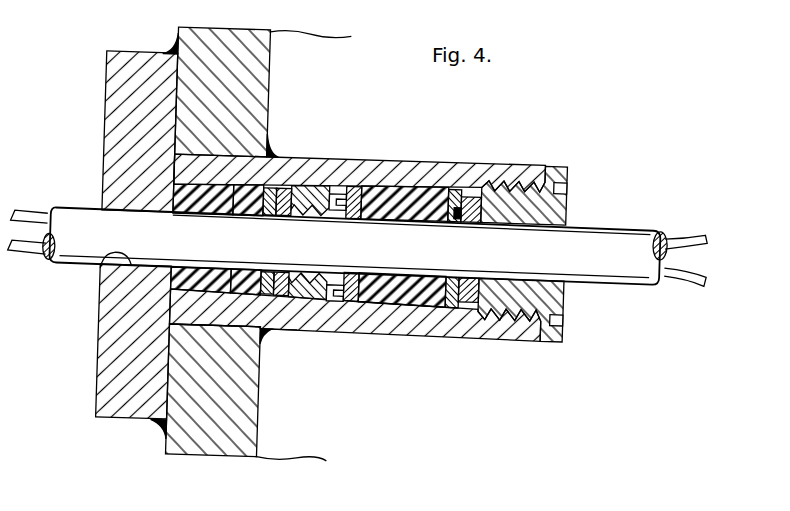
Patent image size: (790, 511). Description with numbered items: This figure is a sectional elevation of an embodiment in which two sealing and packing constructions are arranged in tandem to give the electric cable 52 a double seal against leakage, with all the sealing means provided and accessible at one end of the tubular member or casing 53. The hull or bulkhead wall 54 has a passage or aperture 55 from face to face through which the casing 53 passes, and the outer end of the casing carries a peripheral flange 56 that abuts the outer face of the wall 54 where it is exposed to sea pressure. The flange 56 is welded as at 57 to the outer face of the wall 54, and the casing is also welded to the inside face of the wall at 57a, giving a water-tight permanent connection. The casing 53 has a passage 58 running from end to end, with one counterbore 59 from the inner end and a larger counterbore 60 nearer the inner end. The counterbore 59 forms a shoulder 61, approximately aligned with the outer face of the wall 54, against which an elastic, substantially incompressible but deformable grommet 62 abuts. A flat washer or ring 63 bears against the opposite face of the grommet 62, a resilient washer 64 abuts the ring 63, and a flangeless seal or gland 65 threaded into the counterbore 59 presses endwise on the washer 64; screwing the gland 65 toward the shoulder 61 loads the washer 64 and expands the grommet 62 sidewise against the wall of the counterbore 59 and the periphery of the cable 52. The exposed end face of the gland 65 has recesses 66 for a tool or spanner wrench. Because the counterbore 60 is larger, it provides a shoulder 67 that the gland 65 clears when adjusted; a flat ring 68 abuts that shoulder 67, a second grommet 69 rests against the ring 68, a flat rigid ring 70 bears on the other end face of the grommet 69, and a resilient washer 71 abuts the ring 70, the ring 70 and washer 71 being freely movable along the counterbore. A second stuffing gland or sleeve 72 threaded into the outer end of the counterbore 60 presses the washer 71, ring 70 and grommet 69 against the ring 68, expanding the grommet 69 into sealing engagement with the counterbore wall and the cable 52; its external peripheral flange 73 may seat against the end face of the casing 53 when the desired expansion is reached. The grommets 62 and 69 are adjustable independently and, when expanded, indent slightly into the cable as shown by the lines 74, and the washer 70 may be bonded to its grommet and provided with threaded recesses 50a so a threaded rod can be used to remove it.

The threaded recesses 50a is at (449, 214).
The electric cable 52 is at (61, 219).
The tubular member or casing 53 is at (403, 167).
The hull or bulkhead wall 54 is at (228, 452).
The passage or aperture 55 is at (260, 322).
The peripheral flange 56 is at (114, 297).
The weld 57 is at (165, 434).
The weld 57a is at (268, 334).
The passage 58 is at (101, 277).
The counterbore 59 is at (232, 190).
The counterbore 60 is at (425, 316).
The shoulder 61 is at (185, 190).
The grommet 62 is at (263, 334).
The flat washer or ring 63 is at (276, 189).
The resilient washer 64 is at (295, 191).
The seal or gland 65 is at (326, 187).
The recesses 66 is at (347, 189).
The shoulder 67 is at (327, 305).
The flat ring 68 is at (345, 305).
The grommet 69 is at (442, 314).
The flat rigid ring 70 is at (454, 190).
The resilient washer 71 is at (471, 193).
The second stuffing gland or sleeve 72 is at (526, 206).
The external peripheral flange 73 is at (553, 167).
The lines 74 is at (204, 219).